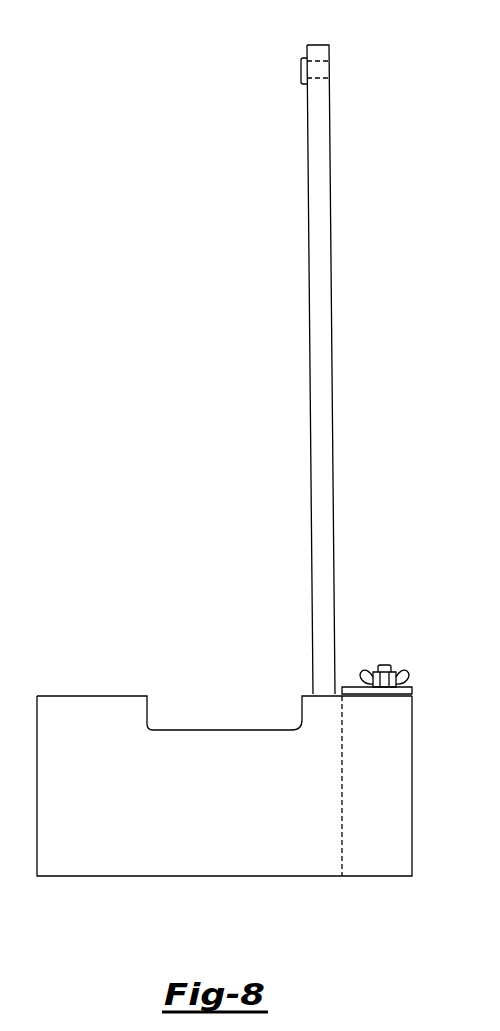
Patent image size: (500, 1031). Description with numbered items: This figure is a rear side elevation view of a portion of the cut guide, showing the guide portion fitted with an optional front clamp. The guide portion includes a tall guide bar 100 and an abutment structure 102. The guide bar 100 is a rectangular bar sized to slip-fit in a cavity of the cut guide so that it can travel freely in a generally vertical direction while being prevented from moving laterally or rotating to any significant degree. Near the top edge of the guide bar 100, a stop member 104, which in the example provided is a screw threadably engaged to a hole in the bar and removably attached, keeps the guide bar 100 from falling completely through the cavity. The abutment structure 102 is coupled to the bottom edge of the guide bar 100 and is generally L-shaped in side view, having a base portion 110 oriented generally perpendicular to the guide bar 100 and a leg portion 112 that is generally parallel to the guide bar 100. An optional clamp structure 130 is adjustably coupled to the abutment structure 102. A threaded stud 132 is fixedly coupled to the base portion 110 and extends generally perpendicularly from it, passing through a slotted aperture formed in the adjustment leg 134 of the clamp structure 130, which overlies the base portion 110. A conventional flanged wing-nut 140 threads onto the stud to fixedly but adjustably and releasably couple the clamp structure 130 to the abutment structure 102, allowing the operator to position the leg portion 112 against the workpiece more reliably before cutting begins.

The guide bar 100 is at (320, 328).
The abutment structure 102 is at (220, 765).
The stop member 104 is at (266, 71).
The base portion 110 is at (57, 696).
The leg portion 112 is at (163, 860).
The clamp structure 130 is at (377, 655).
The threaded stud 132 is at (385, 664).
The adjustment leg 134 is at (405, 688).
The flanged wing-nut 140 is at (366, 674).